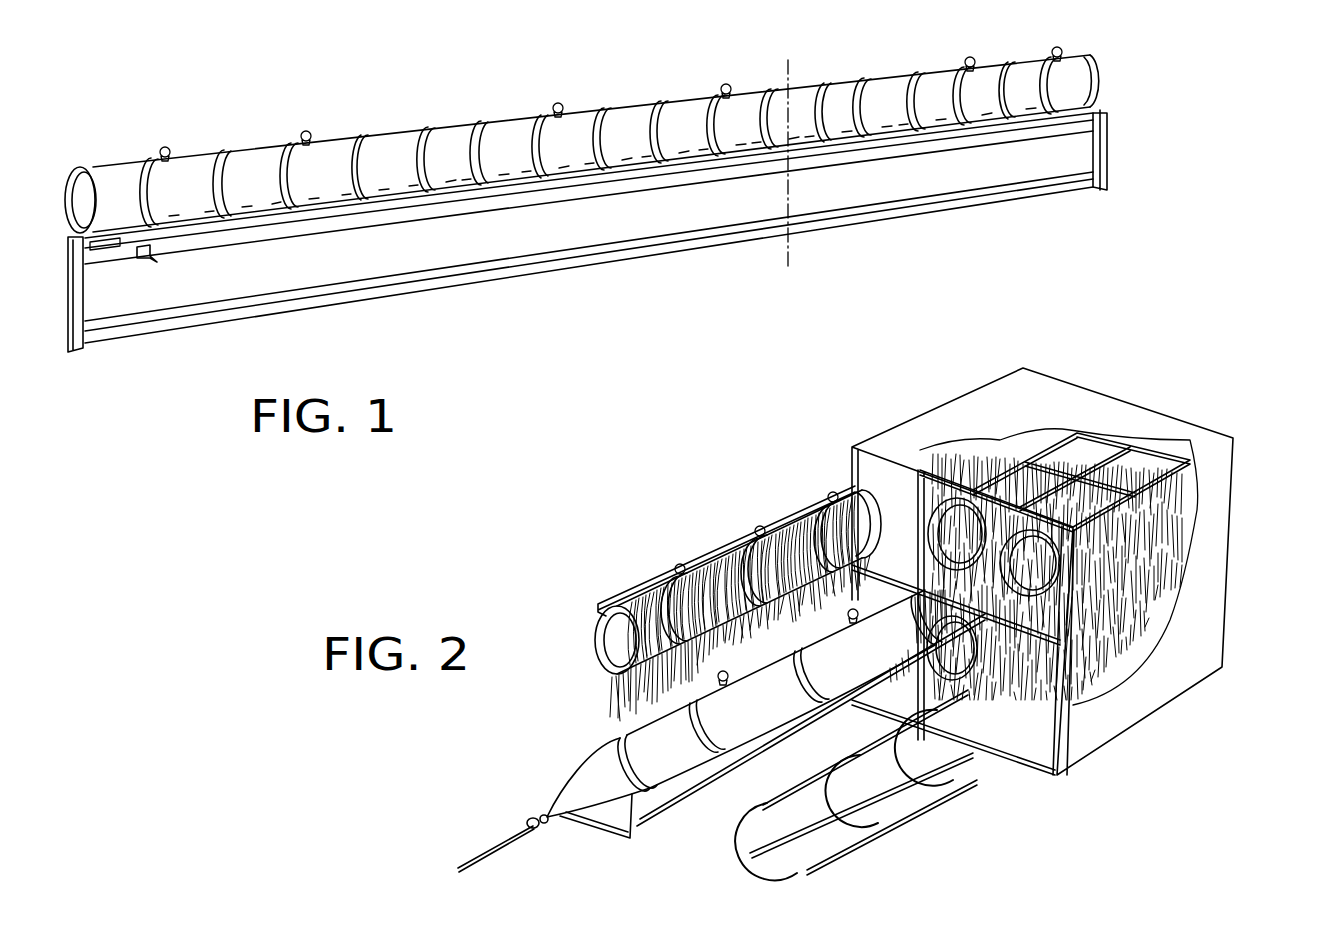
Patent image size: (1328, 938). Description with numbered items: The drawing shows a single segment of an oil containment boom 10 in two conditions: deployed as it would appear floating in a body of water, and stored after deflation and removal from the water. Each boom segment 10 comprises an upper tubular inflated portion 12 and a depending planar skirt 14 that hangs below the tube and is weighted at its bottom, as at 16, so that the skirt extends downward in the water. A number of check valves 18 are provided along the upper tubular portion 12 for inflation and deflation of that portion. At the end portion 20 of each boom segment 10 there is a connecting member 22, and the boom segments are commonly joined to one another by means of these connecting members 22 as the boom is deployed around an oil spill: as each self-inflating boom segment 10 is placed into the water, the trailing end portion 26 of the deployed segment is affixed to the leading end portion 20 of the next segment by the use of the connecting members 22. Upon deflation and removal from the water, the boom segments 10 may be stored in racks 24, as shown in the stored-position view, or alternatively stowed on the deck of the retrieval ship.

In FIG. 1, the oil containment boom segment 10 is at (467, 97).
In FIG. 1, the upper tubular inflated portion 12 is at (807, 82).
In FIG. 2, the upper tubular inflated portion 12 is at (668, 600).
In FIG. 1, the depending planar skirt 14 is at (307, 281).
In FIG. 2, the depending planar skirt 14 is at (663, 800).
In FIG. 1, the weight at bottom of skirt 16 is at (445, 280).
In FIG. 2, the weight at bottom of skirt 16 is at (695, 796).
In FIG. 1, the check valves 18 is at (1057, 55).
In FIG. 2, the check valves 18 is at (855, 620).
In FIG. 1, the end portion 20 is at (75, 156).
In FIG. 2, the end portion 20 is at (583, 654).
In FIG. 1, the connecting member 22 is at (78, 207).
In FIG. 2, the rack 24 is at (1217, 533).
In FIG. 1, the trailing end portion 26 is at (1120, 93).
In FIG. 2, the trailing end portion 26 is at (872, 520).